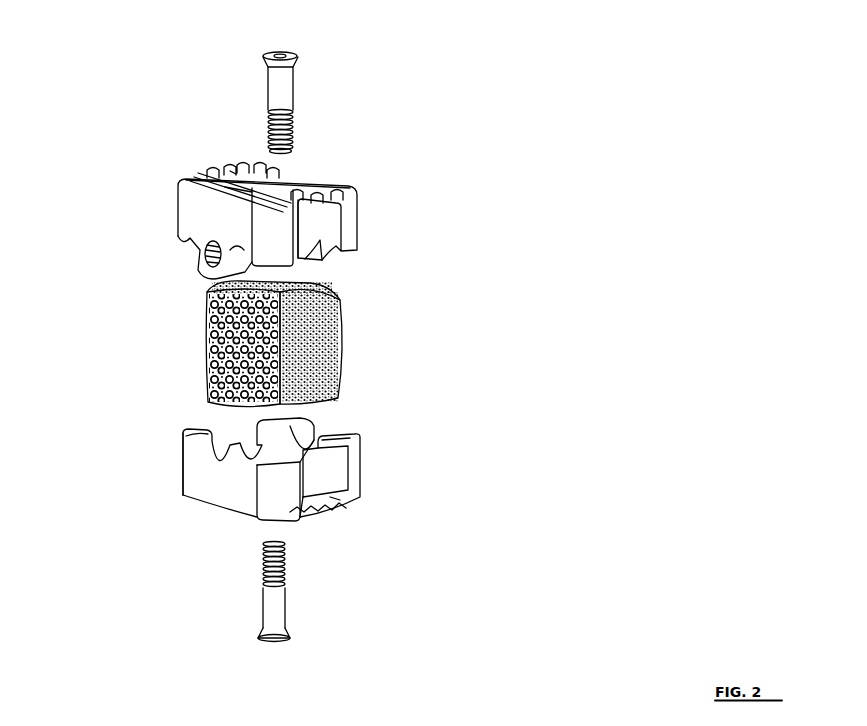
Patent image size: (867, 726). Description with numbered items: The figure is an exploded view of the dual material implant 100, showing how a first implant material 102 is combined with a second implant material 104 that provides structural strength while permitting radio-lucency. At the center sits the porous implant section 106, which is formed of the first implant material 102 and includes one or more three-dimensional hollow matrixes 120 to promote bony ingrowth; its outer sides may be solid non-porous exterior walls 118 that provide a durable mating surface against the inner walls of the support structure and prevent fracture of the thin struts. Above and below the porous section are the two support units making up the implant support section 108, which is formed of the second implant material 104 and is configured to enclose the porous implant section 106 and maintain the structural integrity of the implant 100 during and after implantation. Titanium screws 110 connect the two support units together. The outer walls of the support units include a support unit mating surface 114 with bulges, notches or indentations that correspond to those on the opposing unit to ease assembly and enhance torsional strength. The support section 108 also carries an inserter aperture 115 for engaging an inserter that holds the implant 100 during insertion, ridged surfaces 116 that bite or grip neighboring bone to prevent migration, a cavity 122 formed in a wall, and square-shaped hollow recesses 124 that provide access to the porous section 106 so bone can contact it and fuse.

The implant 100 is at (437, 48).
The first implant material 102 is at (279, 344).
The second implant material 104 is at (195, 212).
The porous implant section 106 is at (342, 367).
The implant support section 108 is at (198, 227).
The titanium screws 110 is at (282, 90).
The support unit mating surface 114 is at (343, 440).
The inserter aperture 115 is at (207, 257).
The ridged surface 116 is at (225, 187).
The non-porous exterior wall 118 is at (237, 352).
The 3D hollow matrix 120 is at (300, 292).
The cavity 122 is at (190, 445).
The hollow recess 124 is at (235, 172).